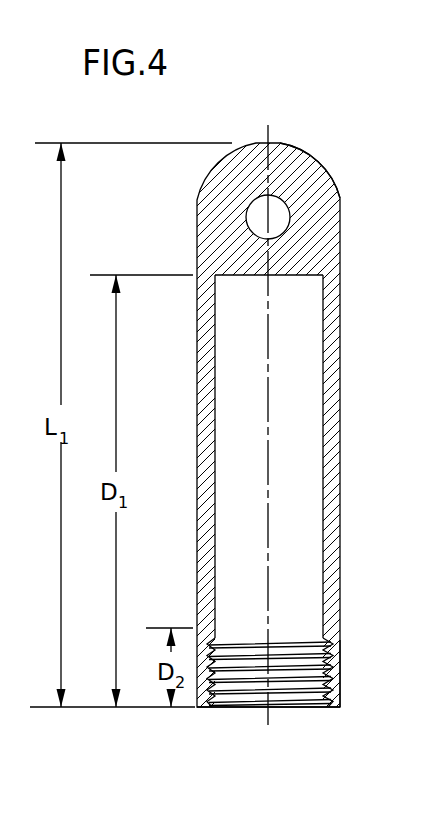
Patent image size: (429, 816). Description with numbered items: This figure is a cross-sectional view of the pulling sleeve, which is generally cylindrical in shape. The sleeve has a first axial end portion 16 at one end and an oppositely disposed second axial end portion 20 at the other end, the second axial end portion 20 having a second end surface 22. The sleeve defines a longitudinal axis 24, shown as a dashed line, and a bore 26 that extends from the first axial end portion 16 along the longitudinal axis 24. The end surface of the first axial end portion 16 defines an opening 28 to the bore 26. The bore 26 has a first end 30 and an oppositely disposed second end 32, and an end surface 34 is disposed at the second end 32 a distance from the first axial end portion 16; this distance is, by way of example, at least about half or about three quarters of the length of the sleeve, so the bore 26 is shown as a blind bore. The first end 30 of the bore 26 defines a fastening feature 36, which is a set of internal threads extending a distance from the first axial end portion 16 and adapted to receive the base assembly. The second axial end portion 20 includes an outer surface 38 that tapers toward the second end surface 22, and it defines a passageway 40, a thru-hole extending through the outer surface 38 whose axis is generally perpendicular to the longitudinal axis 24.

The first axial end portion 16 is at (342, 670).
The second axial end portion 20 is at (340, 232).
The second end surface 22 is at (278, 142).
The longitudinal axis 24 is at (268, 715).
The bore 26 is at (322, 473).
The opening 28 is at (322, 705).
The first end 30 is at (330, 662).
The second end 32 is at (322, 292).
The end surface 34 is at (237, 277).
The fastening feature 36 is at (238, 695).
The outer surface 38 is at (312, 163).
The passageway 40 is at (246, 211).